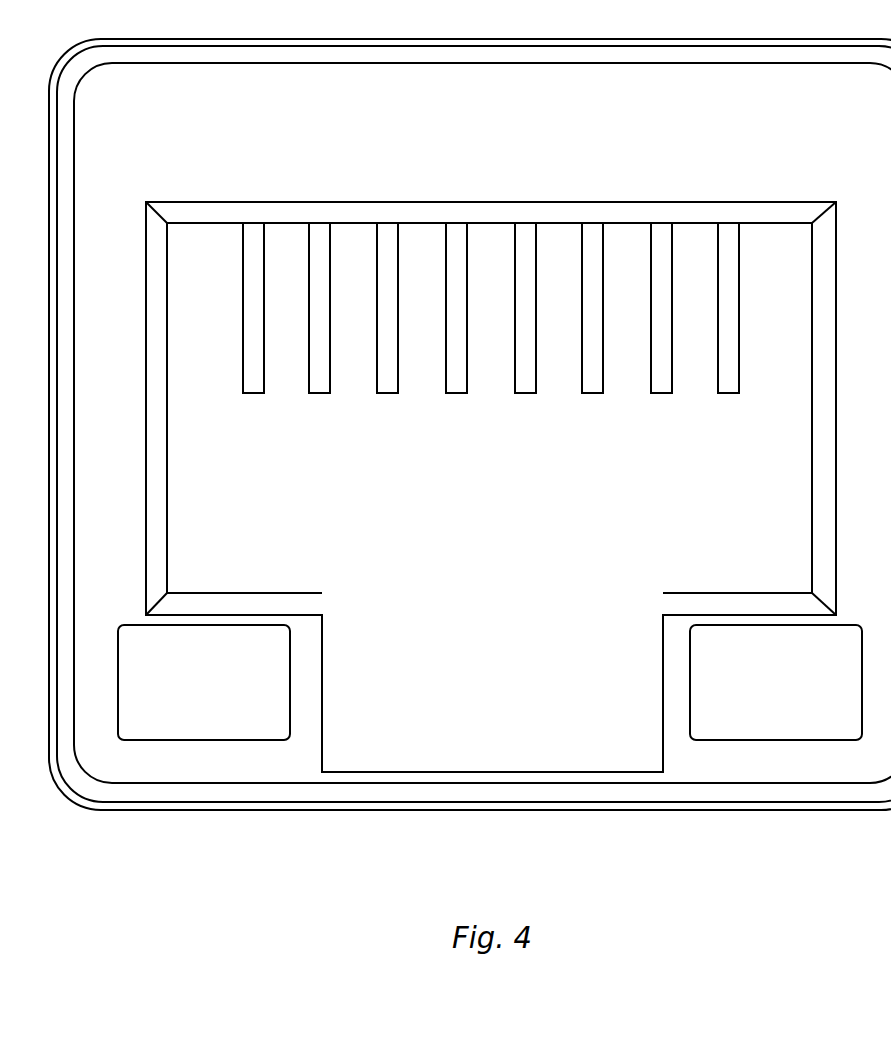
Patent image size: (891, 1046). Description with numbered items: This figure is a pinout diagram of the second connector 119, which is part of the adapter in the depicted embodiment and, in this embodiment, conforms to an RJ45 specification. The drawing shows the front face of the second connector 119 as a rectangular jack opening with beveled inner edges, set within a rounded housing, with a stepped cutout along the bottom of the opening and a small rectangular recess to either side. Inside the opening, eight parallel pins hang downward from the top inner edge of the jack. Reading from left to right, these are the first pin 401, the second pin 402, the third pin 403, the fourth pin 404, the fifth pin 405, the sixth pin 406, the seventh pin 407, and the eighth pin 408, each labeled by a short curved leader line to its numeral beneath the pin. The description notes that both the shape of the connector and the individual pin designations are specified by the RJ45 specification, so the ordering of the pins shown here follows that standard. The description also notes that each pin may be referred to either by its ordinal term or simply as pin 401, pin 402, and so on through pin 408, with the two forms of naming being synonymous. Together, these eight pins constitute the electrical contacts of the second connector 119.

The second connector 119 is at (477, 132).
The Pin 1 401 is at (253, 393).
The Pin 2 402 is at (319, 393).
The Pin 3 403 is at (387, 393).
The Pin 4 404 is at (456, 393).
The Pin 5 405 is at (525, 393).
The Pin 6 406 is at (592, 393).
The Pin 7 407 is at (661, 393).
The Pin 8 408 is at (728, 393).